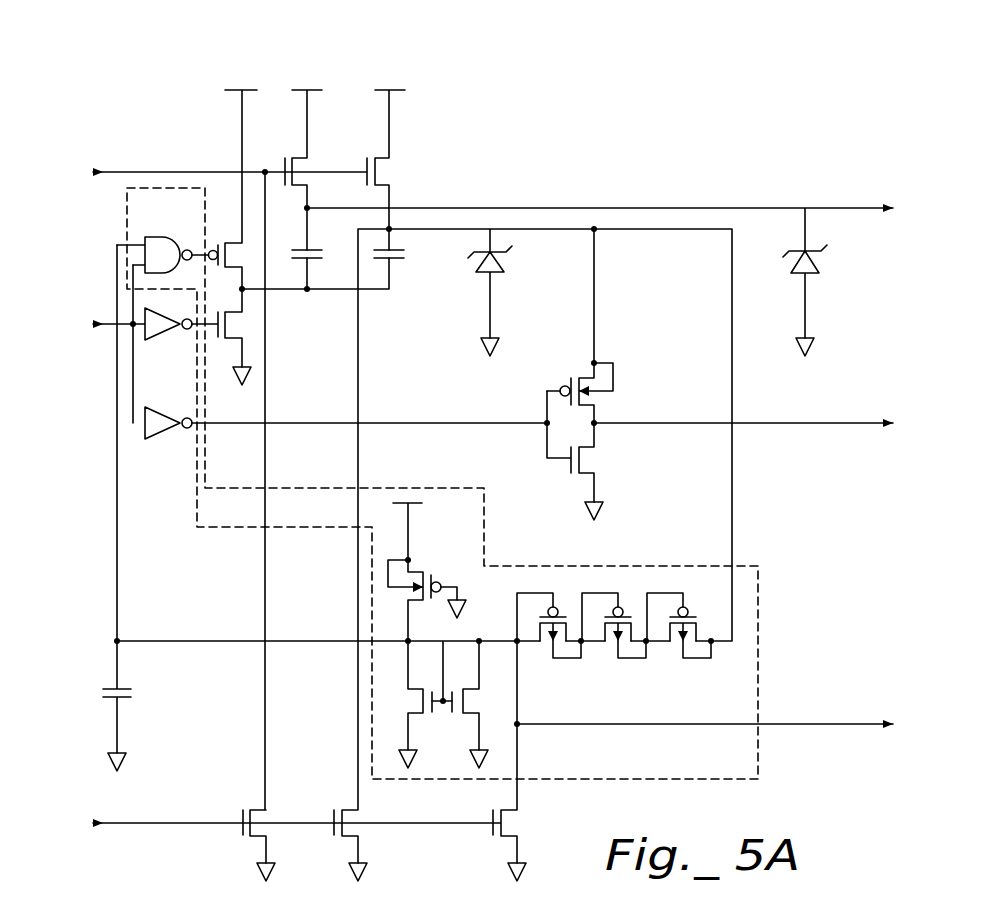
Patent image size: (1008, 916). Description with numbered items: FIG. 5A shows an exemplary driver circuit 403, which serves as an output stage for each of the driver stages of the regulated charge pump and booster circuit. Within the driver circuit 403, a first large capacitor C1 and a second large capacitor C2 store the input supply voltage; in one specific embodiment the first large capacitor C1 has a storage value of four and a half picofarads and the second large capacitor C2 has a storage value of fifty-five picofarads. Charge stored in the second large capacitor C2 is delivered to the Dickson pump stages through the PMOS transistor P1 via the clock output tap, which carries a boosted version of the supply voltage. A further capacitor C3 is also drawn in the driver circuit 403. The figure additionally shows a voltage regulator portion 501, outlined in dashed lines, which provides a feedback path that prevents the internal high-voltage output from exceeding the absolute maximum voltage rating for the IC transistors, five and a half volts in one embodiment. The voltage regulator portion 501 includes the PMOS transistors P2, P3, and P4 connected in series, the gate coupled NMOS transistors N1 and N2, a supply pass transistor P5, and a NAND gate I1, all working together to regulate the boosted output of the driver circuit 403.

The driver circuit 403 is at (491, 53).
The voltage regulator portion 501 is at (744, 765).
The NAND gate I1 is at (154, 236).
The first large capacitor C1 is at (322, 257).
The second large capacitor C2 is at (405, 257).
The capacitor C3 is at (132, 706).
The PMOS transistor P1 is at (579, 386).
The PMOS transistor P2 is at (561, 619).
The PMOS transistor P3 is at (626, 619).
The PMOS transistor P4 is at (691, 619).
The VDD pass transistor P5 is at (427, 572).
The gate coupled NMOS transistor N1 is at (419, 704).
The gate coupled NMOS transistor N2 is at (468, 704).